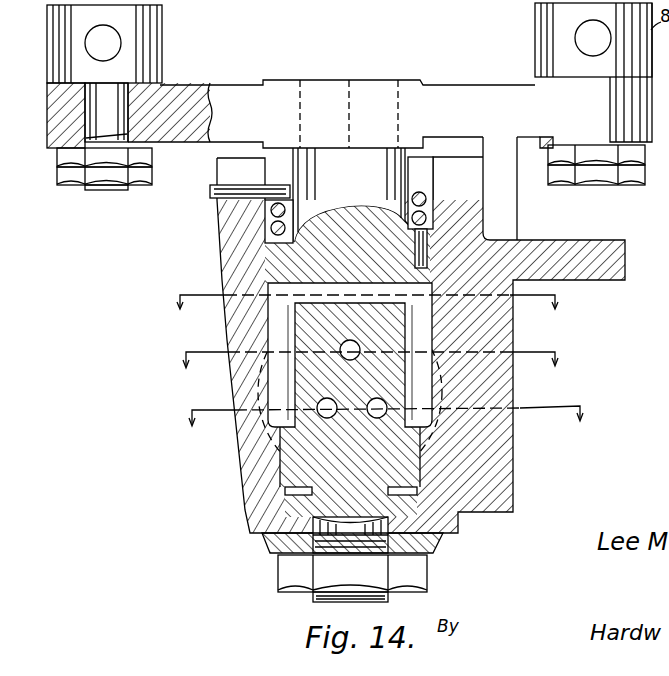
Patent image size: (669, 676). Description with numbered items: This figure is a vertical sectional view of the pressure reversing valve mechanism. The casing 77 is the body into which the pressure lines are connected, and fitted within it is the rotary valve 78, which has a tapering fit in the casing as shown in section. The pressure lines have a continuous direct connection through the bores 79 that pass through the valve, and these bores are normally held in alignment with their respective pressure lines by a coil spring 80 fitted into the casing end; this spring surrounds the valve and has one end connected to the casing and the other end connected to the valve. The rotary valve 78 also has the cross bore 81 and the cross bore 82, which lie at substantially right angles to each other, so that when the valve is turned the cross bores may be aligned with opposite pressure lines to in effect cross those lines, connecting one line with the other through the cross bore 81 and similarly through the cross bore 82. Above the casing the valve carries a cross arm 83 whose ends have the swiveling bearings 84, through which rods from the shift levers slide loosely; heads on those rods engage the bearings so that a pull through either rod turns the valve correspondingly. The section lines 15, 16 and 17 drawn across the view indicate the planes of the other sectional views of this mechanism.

The casing 77 is at (219, 263).
The rotary valve 78 is at (300, 455).
The bores 79 is at (317, 408).
The coil spring 80 is at (424, 198).
The cross bore 81 is at (410, 329).
The cross bore 82 is at (340, 348).
The cross arm 83 is at (418, 82).
The swiveling bearings 84 is at (161, 51).
The section line 15 is at (375, 312).
The section line 16 is at (388, 430).
The section line 17 is at (372, 373).